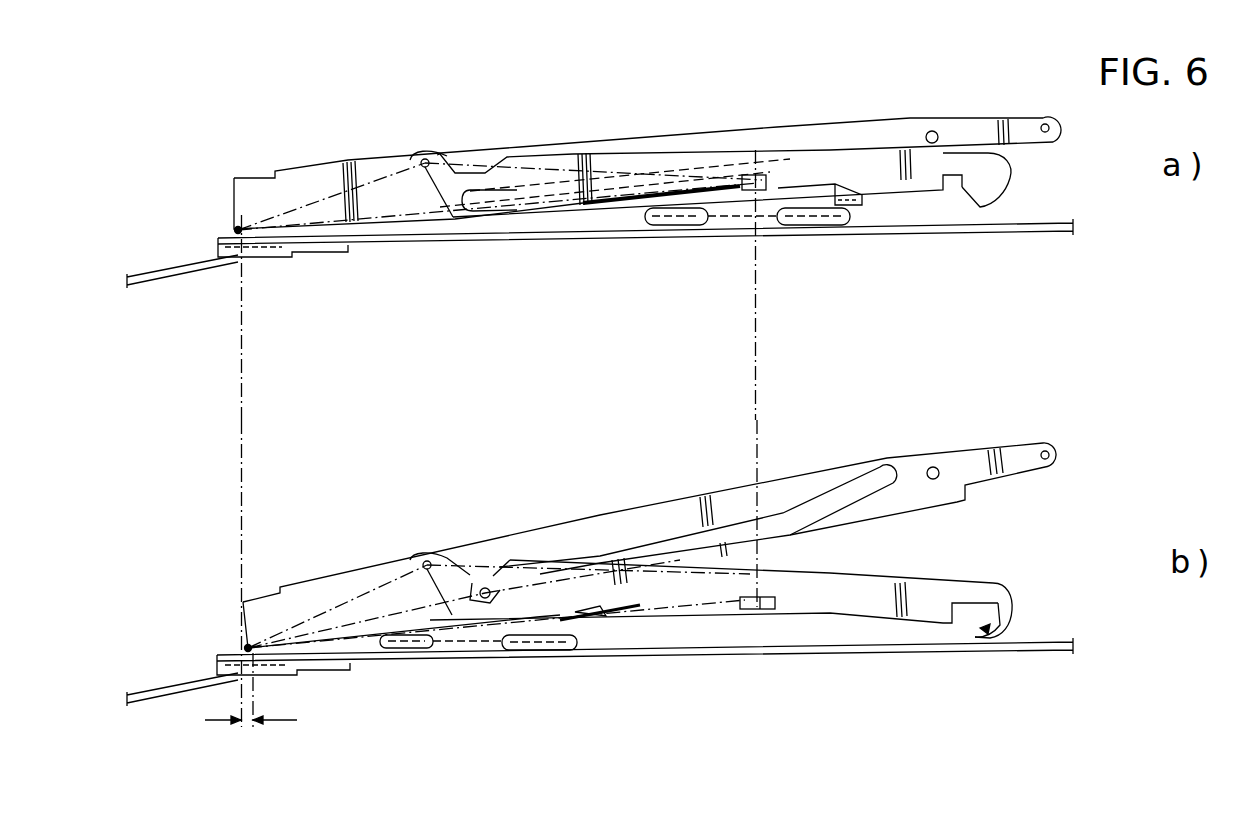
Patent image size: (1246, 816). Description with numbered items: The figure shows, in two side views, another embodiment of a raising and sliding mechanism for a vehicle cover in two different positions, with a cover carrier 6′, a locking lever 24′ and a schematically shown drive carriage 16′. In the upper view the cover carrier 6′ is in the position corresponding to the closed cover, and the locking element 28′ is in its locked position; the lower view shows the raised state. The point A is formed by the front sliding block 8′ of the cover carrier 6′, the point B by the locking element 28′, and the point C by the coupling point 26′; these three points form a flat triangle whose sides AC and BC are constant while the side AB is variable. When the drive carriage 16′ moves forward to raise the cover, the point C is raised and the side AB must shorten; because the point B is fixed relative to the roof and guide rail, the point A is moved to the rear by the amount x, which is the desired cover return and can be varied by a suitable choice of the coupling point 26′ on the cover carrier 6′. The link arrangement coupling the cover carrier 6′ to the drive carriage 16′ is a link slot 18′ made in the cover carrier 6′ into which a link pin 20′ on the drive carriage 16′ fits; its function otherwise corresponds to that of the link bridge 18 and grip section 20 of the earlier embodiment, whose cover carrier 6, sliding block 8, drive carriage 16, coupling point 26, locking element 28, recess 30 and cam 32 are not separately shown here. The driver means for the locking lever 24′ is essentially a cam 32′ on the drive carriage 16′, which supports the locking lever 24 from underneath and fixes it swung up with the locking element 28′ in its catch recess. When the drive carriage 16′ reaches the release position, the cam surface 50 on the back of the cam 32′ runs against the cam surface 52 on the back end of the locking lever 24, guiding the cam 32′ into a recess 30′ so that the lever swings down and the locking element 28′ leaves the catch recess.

In FIG. 6a, the cover carrier 6′ is at (647, 145).
In FIG. 6b, the cover carrier 6′ is at (649, 539).
In FIG. 6a, the front sliding block 8′ is at (600, 269).
In FIG. 6b, the front sliding block 8′ is at (600, 609).
In FIG. 6a, the drive carriage 16′ is at (747, 257).
In FIG. 6b, the drive carriage 16′ is at (478, 684).
In FIG. 6a, the link slot 18′ is at (615, 183).
In FIG. 6b, the link slot 18′ is at (698, 491).
In FIG. 6b, the link pin 20′ is at (495, 529).
In FIG. 6a, the locking lever 24′ is at (699, 139).
In FIG. 6b, the locking lever 24′ is at (714, 649).
In FIG. 6a, the coupling point 26′ is at (407, 110).
In FIG. 6a, the locking element 28′ is at (774, 125).
In FIG. 6b, the locking element 28′ is at (780, 667).
In FIG. 6a, the recess 30′ is at (977, 229).
In FIG. 6b, the recess 30′ is at (959, 660).
In FIG. 6a, the cam 32′ is at (849, 245).
In FIG. 6b, the cam 32′ is at (600, 671).
In FIG. 6a, the arm 6 is at (688, 145).
In FIG. 6b, the arm 6 is at (665, 497).
In FIG. 6a, the base rail 8 is at (222, 253).
In FIG. 6b, the base rail 8 is at (247, 637).
In FIG. 6a, the slide pads 16 is at (727, 226).
In FIG. 6b, the slide pads 16 is at (457, 648).
In FIG. 6a, the link bridge 18 is at (615, 183).
In FIG. 6b, the link bridge 18 is at (805, 508).
In FIG. 6b, the grip section 20 is at (485, 588).
In FIG. 6a, the locking lever 24 is at (557, 163).
In FIG. 6b, the locking lever 24 is at (850, 600).
In FIG. 6a, the pivot link 26 is at (421, 160).
In FIG. 6a, the slide block 28 is at (766, 176).
In FIG. 6b, the slide block 28 is at (770, 612).
In FIG. 6a, the hook 30 is at (965, 183).
In FIG. 6b, the hook 30 is at (967, 630).
In FIG. 6a, the pin 32 is at (858, 203).
In FIG. 6b, the pin 32 is at (580, 623).
In FIG. 6b, the cam surface 50 is at (604, 620).
In FIG. 6b, the cam surface 52 is at (985, 635).
In FIG. 6a, the point A is at (236, 231).
In FIG. 6b, the point A is at (243, 649).
In FIG. 6a, the point B is at (758, 188).
In FIG. 6b, the point B is at (757, 612).
In FIG. 6a, the point C is at (427, 159).
In FIG. 6b, the point C is at (427, 561).
In FIG. 6b, the amount x is at (251, 734).